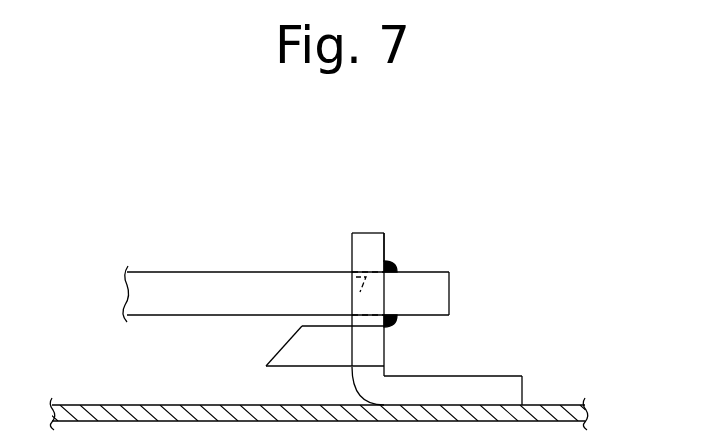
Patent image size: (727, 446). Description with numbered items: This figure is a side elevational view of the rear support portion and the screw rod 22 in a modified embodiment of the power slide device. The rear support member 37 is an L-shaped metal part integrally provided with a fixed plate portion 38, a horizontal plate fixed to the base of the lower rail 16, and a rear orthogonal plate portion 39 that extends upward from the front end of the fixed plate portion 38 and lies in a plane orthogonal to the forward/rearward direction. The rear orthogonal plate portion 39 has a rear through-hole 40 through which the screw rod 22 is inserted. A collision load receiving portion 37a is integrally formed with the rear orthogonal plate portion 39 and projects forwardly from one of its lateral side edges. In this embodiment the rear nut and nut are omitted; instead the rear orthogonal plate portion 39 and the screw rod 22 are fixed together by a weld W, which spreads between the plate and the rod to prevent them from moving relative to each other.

The lower rail 16 is at (73, 405).
The screw rod 22 is at (197, 282).
The rear support member 37 is at (351, 240).
The collision load receiving portion 37a is at (290, 350).
The fixed plate portion 38 is at (482, 388).
The rear orthogonal plate portion 39 is at (378, 253).
The rear through-hole 40 is at (350, 293).
The weld W is at (397, 264).